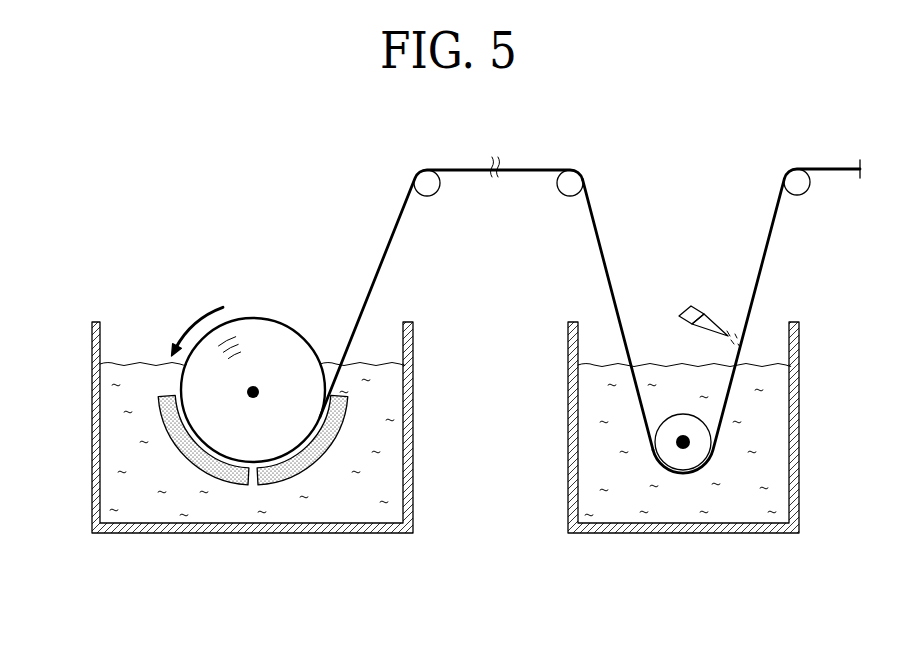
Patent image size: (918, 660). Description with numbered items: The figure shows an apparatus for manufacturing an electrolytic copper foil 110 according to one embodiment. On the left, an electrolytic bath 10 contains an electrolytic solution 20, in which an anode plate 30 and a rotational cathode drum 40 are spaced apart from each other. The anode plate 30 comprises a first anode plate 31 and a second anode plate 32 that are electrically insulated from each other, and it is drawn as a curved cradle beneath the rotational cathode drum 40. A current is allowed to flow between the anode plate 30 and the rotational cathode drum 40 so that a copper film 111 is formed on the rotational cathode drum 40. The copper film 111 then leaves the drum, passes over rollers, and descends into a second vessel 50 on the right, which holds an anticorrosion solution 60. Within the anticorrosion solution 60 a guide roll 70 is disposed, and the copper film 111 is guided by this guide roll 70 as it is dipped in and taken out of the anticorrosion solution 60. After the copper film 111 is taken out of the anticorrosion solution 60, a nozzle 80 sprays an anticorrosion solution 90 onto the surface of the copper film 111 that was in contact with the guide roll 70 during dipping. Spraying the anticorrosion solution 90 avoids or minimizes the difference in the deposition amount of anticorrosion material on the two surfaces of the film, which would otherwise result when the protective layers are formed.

The electrolytic bath 10 is at (92, 447).
The electrolytic solution 20 is at (378, 473).
The anode plate 30 is at (253, 514).
The first anode plate 31 is at (215, 478).
The second anode plate 32 is at (293, 468).
The rotational cathode drum 40 is at (265, 318).
The second bath tank 50 is at (568, 441).
The anticorrosion solution 60 is at (777, 425).
The guide roll 70 is at (682, 457).
The nozzle 80 is at (692, 312).
The anticorrosion solution 90 is at (732, 328).
The electrolytic copper foil 110 is at (773, 205).
The copper film 111 is at (593, 203).